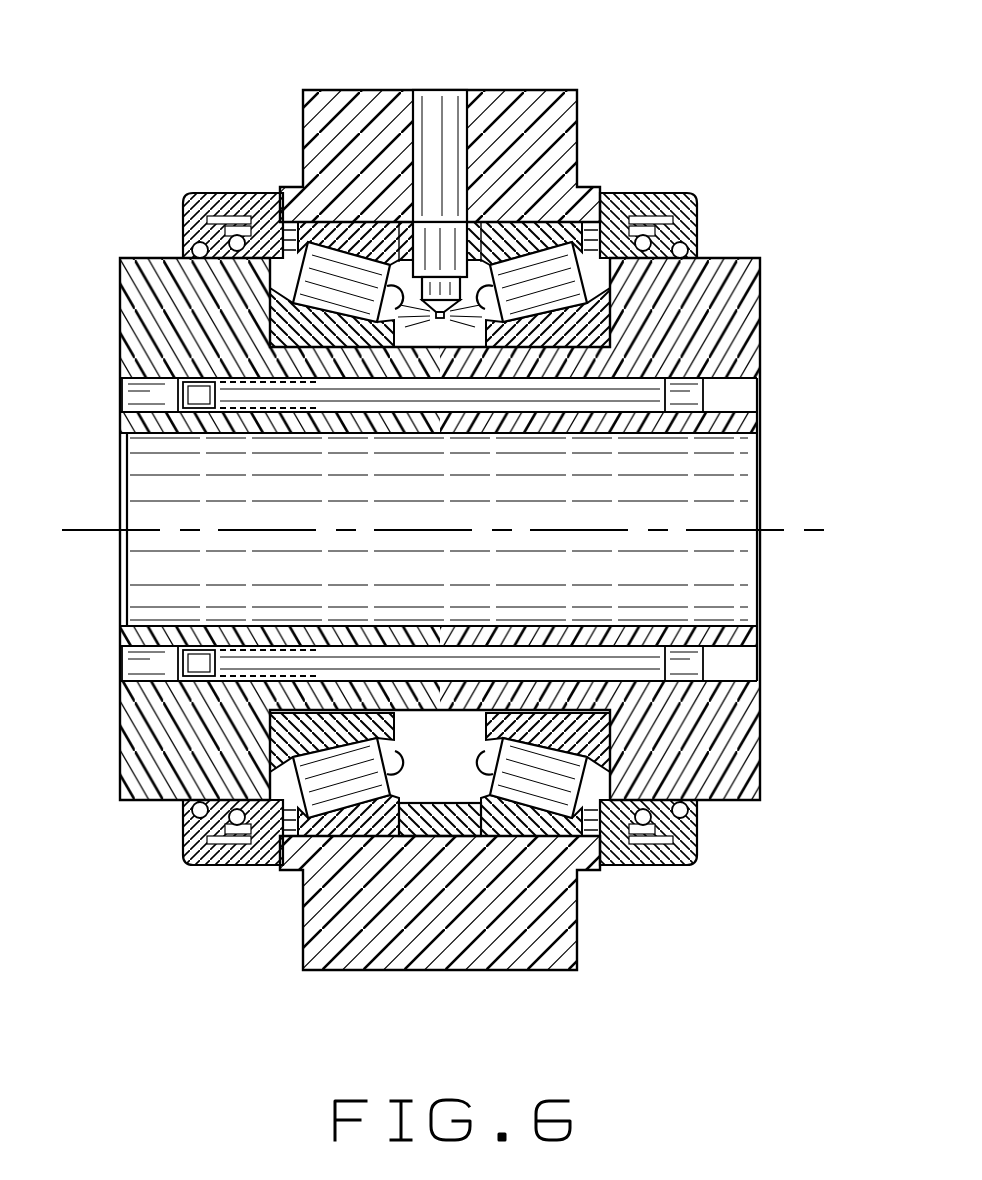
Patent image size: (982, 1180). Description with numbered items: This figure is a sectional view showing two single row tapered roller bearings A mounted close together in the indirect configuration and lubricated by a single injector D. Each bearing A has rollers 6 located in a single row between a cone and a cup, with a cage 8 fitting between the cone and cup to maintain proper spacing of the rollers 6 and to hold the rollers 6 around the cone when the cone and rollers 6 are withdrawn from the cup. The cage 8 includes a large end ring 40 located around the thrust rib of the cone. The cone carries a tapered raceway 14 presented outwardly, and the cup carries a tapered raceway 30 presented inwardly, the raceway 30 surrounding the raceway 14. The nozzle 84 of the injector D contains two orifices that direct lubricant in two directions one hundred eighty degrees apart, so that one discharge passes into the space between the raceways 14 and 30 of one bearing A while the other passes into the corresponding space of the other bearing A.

The rollers 6 is at (330, 292).
The cage 8 is at (395, 754).
The tapered raceway 14 is at (335, 297).
The tapered raceway 30 is at (280, 190).
The large end ring 40 is at (285, 812).
The nozzle 84 is at (440, 320).
The tapered roller bearing A is at (272, 277).
The injector D is at (441, 86).